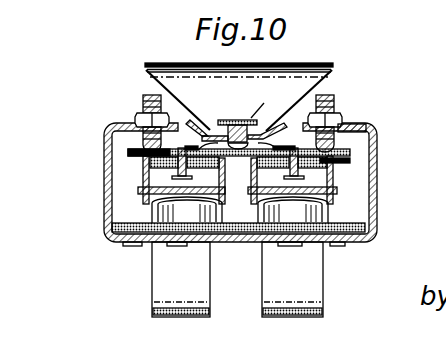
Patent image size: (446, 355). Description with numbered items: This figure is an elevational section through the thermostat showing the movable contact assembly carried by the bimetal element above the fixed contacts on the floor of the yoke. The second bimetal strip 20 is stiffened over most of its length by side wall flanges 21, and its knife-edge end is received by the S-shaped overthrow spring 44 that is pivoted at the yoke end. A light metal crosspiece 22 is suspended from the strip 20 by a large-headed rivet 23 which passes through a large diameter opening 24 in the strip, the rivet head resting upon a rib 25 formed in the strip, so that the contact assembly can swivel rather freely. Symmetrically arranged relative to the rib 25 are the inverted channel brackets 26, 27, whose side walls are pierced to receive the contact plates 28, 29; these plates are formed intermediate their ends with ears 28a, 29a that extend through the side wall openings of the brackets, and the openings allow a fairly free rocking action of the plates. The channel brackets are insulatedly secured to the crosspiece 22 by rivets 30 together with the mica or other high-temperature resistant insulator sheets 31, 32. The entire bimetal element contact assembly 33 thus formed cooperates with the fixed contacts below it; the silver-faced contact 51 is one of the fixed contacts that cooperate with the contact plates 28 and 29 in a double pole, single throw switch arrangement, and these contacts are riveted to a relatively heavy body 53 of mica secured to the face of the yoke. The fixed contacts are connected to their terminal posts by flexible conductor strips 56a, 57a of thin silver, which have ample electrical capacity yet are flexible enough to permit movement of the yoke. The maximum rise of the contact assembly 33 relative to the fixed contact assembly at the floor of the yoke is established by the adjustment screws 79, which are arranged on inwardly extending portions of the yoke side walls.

The second bimetal strip 20 is at (205, 134).
The side wall flanges 21 is at (194, 130).
The crosspiece 22 is at (148, 151).
The large-headed rivet 23 is at (241, 117).
The large diameter opening 24 is at (285, 122).
The rib 25 is at (238, 120).
The inverted channel bracket 26 is at (150, 176).
The inverted channel bracket 27 is at (368, 217).
The contact plate 28 is at (143, 160).
The ear 28a is at (140, 190).
The contact plate 29 is at (334, 186).
The ear 29a is at (336, 198).
The rivets 30 is at (354, 126).
The insulator sheet 31 is at (343, 153).
The insulator sheet 32 is at (335, 167).
The bimetal element contact assembly 33 is at (250, 183).
The S-shaped overthrow spring 44 is at (302, 66).
The silver-faced contact 51 is at (112, 236).
The mica body 53 is at (315, 243).
The flexible conductor strip 56a is at (154, 278).
The flexible conductor strip 57a is at (323, 293).
The adjustment screws 79 is at (146, 94).